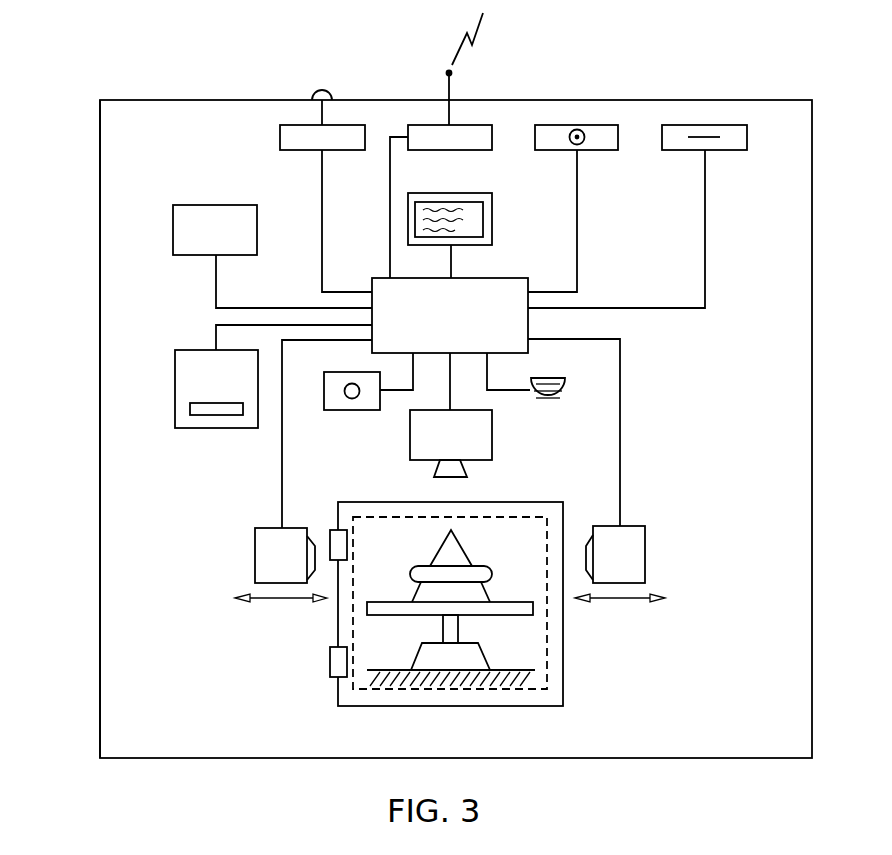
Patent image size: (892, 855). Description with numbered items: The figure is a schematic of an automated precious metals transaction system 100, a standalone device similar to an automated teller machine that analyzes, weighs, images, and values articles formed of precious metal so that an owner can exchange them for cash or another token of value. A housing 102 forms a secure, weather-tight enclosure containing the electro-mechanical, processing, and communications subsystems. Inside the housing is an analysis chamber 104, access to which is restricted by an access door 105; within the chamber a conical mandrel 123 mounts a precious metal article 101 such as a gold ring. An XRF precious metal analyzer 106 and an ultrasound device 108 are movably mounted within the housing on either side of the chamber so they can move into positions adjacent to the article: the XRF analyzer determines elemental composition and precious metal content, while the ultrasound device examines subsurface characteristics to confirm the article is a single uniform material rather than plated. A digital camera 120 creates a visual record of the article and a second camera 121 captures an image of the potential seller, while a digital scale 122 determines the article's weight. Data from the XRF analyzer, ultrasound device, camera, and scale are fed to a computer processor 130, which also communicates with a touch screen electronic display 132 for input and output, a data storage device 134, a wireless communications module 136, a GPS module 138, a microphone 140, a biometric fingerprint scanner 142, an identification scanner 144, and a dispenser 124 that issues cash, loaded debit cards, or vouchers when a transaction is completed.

The automated precious metals transaction system 100 is at (152, 68).
The precious metal article 101 is at (480, 565).
The housing 102 is at (100, 256).
The analysis chamber 104 is at (547, 622).
The access door 105 is at (563, 675).
The XRF precious metal analyzer 106 is at (255, 553).
The ultrasound device 108 is at (650, 548).
The digital camera 120 is at (410, 437).
The second camera 121 is at (353, 372).
The digital scale 122 is at (415, 655).
The conical mandrel 123 is at (438, 552).
The dispenser 124 is at (196, 350).
The computer processor 130 is at (528, 320).
The touch screen electronic display 132 is at (473, 193).
The data storage device 134 is at (222, 205).
The wireless communications module 136 is at (478, 125).
The GPS module 138 is at (280, 137).
The microphone 140 is at (550, 408).
The biometric fingerprint scanner 142 is at (605, 150).
The identification scanner 144 is at (730, 150).